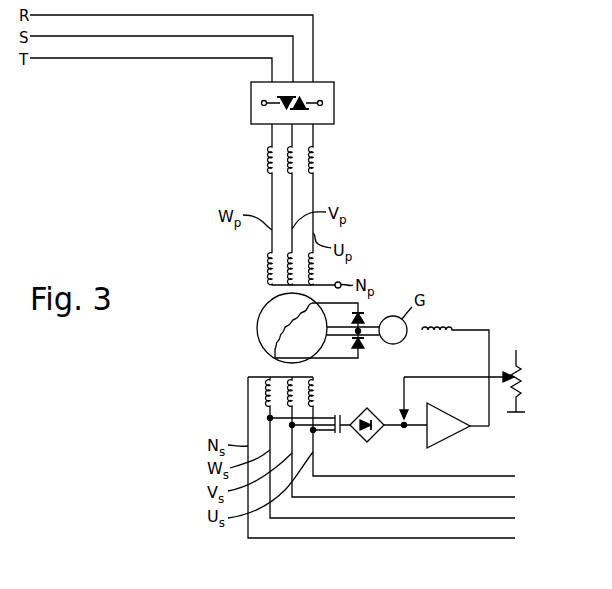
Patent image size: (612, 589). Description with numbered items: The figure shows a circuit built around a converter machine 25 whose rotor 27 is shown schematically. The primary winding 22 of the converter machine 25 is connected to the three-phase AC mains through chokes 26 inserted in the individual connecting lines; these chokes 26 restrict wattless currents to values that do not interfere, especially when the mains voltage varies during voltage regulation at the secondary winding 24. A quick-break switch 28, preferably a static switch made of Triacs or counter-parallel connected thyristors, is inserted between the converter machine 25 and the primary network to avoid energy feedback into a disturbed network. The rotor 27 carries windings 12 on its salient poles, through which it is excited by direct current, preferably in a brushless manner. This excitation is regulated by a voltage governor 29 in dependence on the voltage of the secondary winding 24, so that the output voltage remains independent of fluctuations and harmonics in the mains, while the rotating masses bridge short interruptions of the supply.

The windings 12 is at (283, 332).
The primary winding 22 is at (271, 267).
The secondary winding 24 is at (314, 394).
The converter machine 25 is at (390, 291).
The chokes 26 is at (271, 160).
The rotor 27 is at (266, 343).
The quick-break switch 28 is at (334, 106).
The voltage governor 29 is at (440, 431).